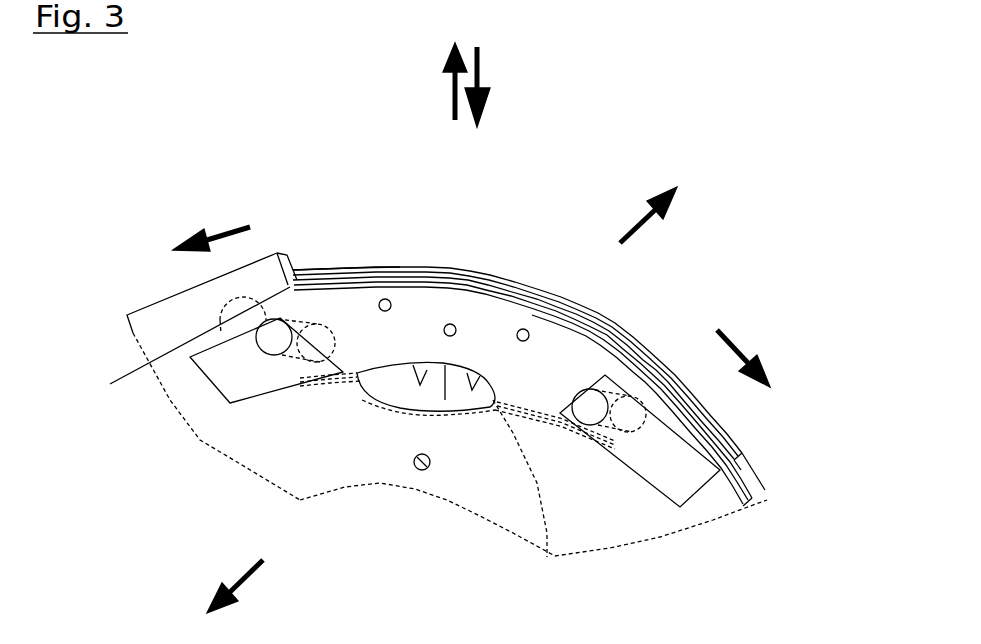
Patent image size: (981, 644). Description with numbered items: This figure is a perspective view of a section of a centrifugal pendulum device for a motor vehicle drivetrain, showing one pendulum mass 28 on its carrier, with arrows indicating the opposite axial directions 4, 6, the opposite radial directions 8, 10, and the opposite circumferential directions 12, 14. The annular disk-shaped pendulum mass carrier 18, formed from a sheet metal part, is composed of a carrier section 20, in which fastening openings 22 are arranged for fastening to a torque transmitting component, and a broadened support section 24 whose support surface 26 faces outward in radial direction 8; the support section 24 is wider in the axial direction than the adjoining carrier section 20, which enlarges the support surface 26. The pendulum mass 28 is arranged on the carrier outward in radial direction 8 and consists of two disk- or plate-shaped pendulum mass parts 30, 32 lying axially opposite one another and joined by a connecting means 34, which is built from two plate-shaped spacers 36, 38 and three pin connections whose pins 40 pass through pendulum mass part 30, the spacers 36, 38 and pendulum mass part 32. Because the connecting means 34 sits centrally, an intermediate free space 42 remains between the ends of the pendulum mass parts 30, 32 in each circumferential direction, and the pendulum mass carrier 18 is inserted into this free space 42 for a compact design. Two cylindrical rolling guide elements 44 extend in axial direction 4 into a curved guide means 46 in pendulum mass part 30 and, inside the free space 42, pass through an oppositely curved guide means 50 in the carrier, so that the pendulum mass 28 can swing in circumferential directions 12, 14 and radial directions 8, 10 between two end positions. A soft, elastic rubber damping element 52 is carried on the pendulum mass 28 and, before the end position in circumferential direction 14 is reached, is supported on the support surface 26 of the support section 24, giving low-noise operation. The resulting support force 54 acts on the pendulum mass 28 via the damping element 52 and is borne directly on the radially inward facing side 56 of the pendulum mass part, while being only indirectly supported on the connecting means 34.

The axial direction 4 is at (237, 567).
The axial direction 6 is at (637, 217).
The radial direction 8 is at (448, 93).
The radial direction 10 is at (483, 63).
The circumferential direction 12 is at (231, 230).
The circumferential direction 14 is at (740, 347).
The pendulum mass carrier 18 is at (767, 470).
The carrier section 20 is at (333, 465).
The fastening openings 22 is at (422, 470).
The support section 24 is at (393, 402).
The support surface 26 is at (415, 367).
The pendulum mass 28 is at (637, 325).
The pendulum mass part 30 is at (340, 300).
The pendulum mass part 32 is at (387, 267).
The connecting means 34 is at (500, 283).
The spacer 36 is at (462, 283).
The spacer 38 is at (483, 285).
The pins 40 is at (450, 324).
The free space 42 is at (355, 262).
The guide elements 44 is at (266, 341).
The guide means 46 is at (305, 362).
The guide means 50 is at (110, 384).
The damping element 52 is at (547, 558).
The support force 54 is at (445, 365).
The side 56 is at (478, 378).